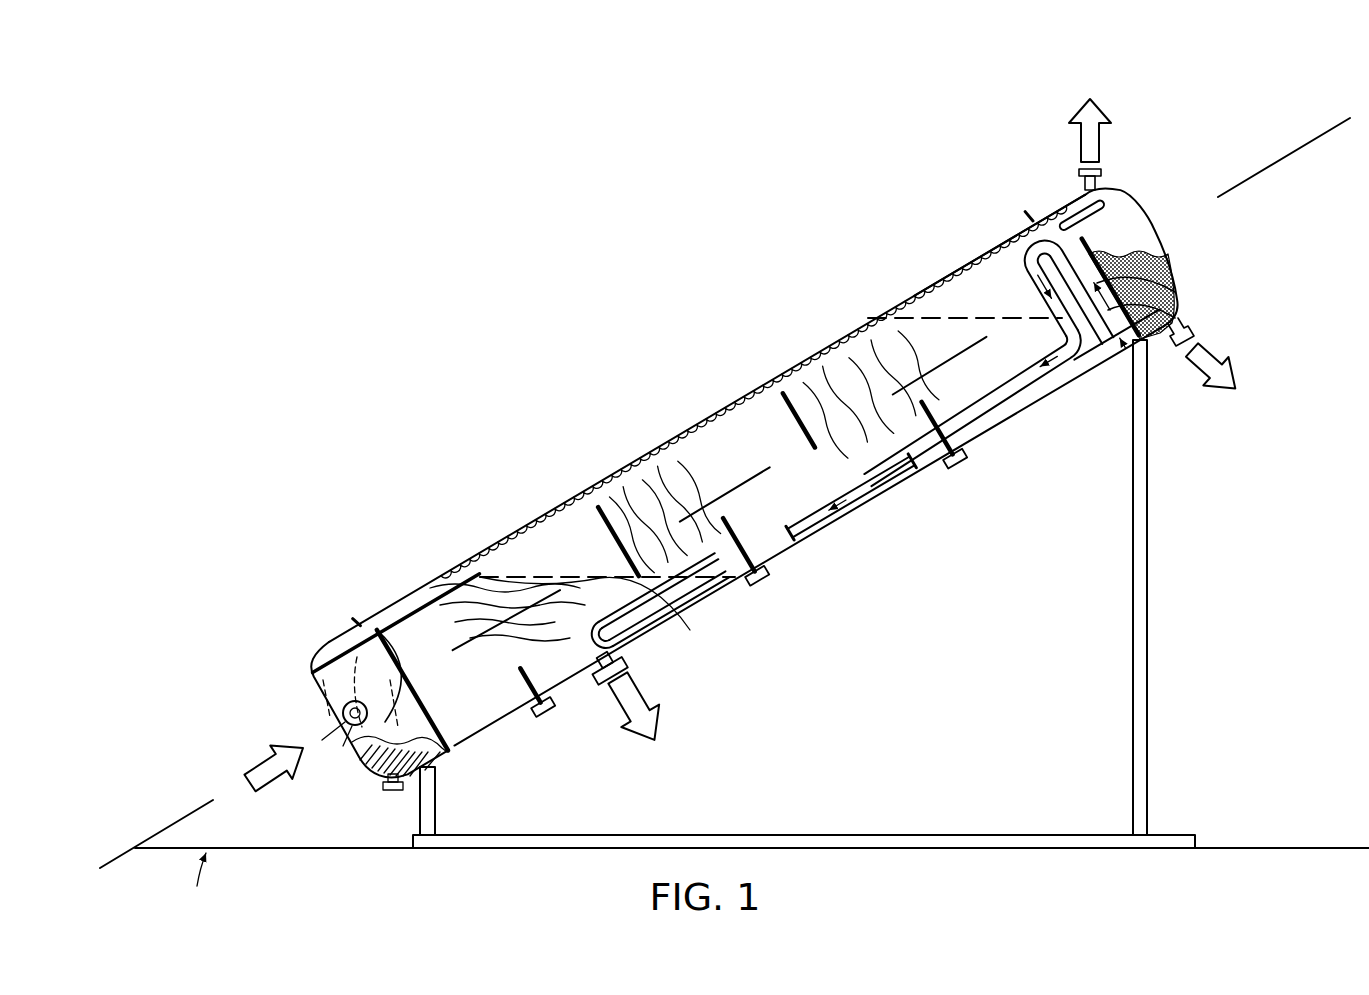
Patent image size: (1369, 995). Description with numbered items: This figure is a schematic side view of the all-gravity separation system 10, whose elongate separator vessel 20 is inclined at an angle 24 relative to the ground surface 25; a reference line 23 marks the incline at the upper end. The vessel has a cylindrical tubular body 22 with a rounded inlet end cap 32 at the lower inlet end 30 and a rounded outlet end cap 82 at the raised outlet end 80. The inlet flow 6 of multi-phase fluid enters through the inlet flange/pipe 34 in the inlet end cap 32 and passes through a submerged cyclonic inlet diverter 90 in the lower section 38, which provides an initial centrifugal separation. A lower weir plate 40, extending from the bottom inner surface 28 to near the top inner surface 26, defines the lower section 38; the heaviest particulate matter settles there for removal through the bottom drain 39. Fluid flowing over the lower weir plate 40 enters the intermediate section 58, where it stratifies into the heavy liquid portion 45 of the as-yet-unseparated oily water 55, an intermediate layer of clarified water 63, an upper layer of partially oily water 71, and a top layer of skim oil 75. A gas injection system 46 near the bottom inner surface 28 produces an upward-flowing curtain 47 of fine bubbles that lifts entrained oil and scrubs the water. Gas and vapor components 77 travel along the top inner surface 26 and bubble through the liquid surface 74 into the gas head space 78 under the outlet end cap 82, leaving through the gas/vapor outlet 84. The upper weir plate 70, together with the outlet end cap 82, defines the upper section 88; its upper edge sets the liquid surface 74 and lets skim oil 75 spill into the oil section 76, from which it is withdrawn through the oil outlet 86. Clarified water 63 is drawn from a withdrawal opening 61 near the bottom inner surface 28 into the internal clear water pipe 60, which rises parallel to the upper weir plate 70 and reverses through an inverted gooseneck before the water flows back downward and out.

The inlet flow 6 is at (272, 772).
The separation system 10 is at (612, 298).
The separator vessel 20 is at (818, 322).
The tubular body 22 is at (648, 452).
The incline reference line 23 is at (1285, 160).
The angle 24 is at (197, 801).
The ground surface 25 is at (1262, 847).
The top inner surface 26 is at (533, 548).
The bottom inner surface 28 is at (508, 695).
The lower inlet end 30 is at (247, 721).
The inlet end cap 32 is at (313, 702).
The inlet flange/pipe 34 is at (352, 726).
The lower section 38 is at (338, 628).
The bottom drain 39 is at (393, 793).
The lower weir plate 40 is at (412, 650).
The heavy liquid portion 45 is at (449, 704).
The gas injection system 46 is at (838, 516).
The curtain of gas bubbles 47 is at (882, 452).
The oily water layer 55 is at (617, 612).
The intermediate section 58 is at (750, 436).
The internal clear water pipe 60 is at (1000, 403).
The withdrawal opening 61 is at (1123, 348).
The clarified water 63 is at (917, 332).
The upper weir plate 70 is at (1180, 289).
The partially oily water 71 is at (990, 268).
The liquid surface 74 is at (1048, 228).
The skim oil 75 is at (1182, 258).
The oil section 76 is at (1178, 306).
The gas and vapor components 77 is at (1120, 216).
The gas head space 78 is at (1063, 213).
The raised outlet end 80 is at (1220, 185).
The outlet end cap 82 is at (1172, 250).
The gas/vapor outlet 84 is at (1096, 143).
The oil outlet 86 is at (1193, 360).
The upper section 88 is at (1193, 224).
The cyclonic inlet diverter 90 is at (357, 722).